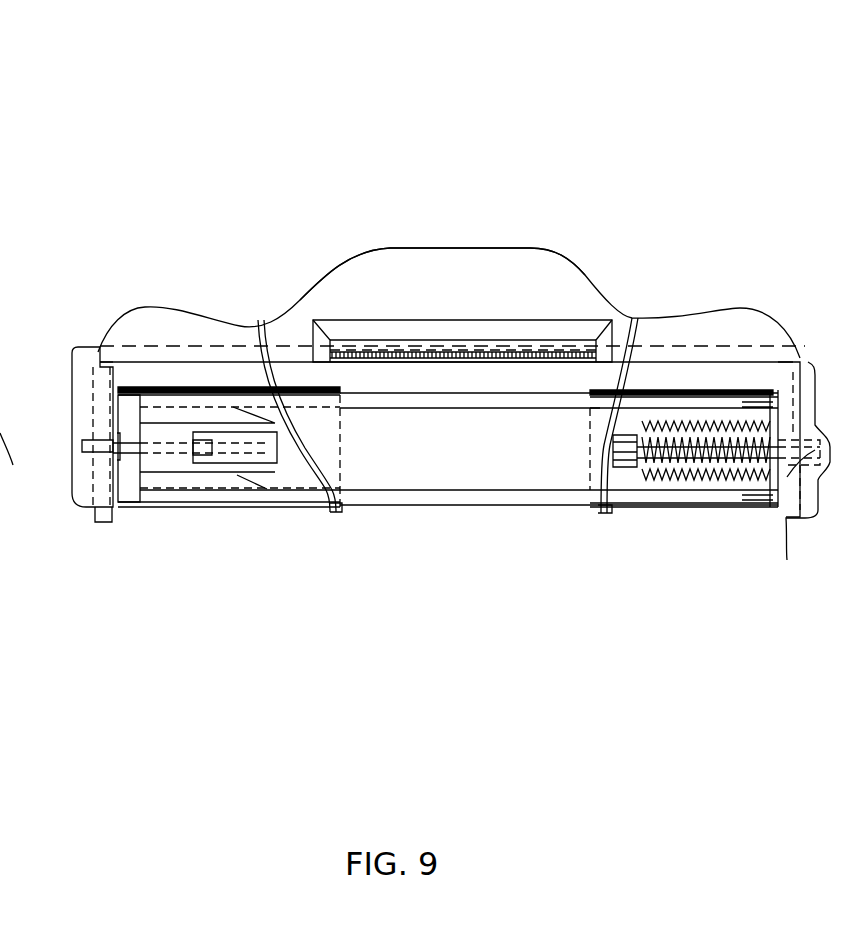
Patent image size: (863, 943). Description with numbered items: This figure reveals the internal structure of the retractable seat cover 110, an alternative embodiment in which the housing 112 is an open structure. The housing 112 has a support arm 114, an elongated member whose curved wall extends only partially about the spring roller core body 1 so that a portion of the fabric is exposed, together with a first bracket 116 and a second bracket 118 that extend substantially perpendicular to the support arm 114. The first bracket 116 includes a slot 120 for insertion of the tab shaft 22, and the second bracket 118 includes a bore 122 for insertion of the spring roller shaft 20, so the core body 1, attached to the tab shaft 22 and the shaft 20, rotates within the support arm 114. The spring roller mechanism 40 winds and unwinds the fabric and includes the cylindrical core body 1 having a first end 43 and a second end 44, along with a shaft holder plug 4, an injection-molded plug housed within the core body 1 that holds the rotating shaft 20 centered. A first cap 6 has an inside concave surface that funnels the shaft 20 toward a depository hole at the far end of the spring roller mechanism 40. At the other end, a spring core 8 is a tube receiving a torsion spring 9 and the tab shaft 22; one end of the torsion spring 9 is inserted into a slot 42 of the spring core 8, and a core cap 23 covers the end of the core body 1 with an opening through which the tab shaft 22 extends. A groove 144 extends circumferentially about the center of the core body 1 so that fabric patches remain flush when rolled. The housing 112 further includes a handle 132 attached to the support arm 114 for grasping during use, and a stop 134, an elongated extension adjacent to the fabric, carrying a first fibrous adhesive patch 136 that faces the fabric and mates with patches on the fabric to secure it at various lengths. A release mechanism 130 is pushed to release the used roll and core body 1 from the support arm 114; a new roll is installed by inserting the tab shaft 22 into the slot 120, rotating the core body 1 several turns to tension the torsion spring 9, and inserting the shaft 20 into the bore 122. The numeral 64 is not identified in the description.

The retractable seat cover 110 is at (603, 132).
The housing 112 is at (510, 307).
The support arm 114 is at (229, 352).
The first bracket 116 is at (818, 510).
The second bracket 118 is at (85, 500).
The slot 120 is at (793, 518).
The bore 122 is at (103, 447).
The release mechanism 130 is at (103, 512).
The handle 132 is at (378, 292).
The stop 134 is at (343, 332).
The first fibrous adhesive patch 136 is at (420, 350).
The groove 144 is at (443, 505).
The spring roller shaft 20 is at (84, 444).
The tab shaft 22 is at (808, 362).
The core cap 23 is at (753, 498).
The spring roller mechanism 40 is at (297, 512).
The slot 42 is at (650, 320).
The first end 43 is at (200, 492).
The second end 44 is at (722, 495).
The shaft holder plug 4 is at (237, 478).
The first cap 6 is at (130, 508).
The spring core 8 is at (640, 432).
The torsion spring 9 is at (665, 470).
The spring roller core body 1 is at (366, 498).
The lever 64 is at (13, 492).